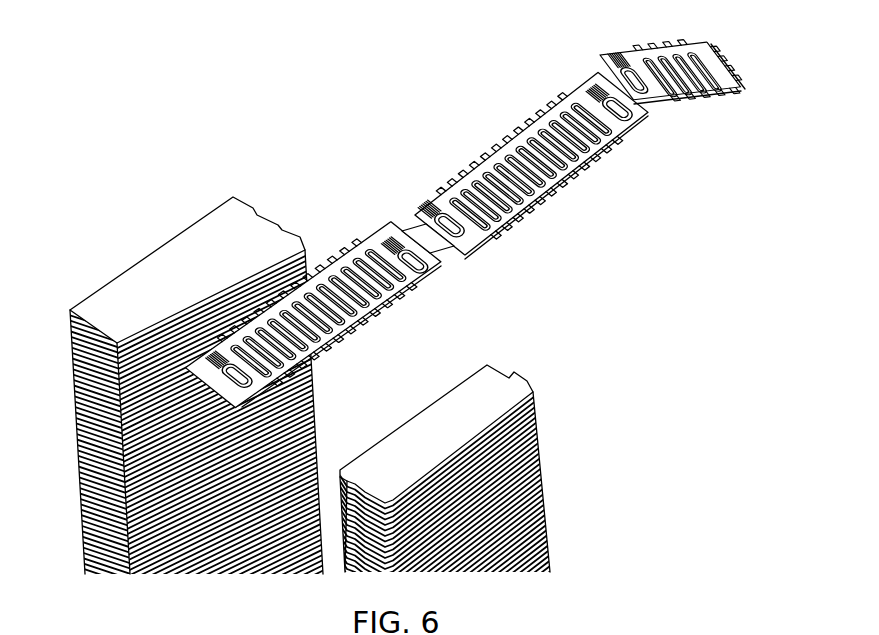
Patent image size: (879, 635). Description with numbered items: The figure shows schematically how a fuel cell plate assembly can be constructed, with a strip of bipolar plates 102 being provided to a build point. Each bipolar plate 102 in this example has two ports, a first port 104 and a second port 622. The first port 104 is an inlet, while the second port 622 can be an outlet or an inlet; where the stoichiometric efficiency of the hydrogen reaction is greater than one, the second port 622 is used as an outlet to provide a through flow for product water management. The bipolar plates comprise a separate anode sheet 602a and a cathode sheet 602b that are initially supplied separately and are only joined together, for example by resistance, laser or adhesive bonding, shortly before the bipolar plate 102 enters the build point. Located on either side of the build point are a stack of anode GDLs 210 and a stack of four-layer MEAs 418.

The stack of 4-layer MEAs 418 is at (128, 298).
The first port 104 is at (233, 373).
The second port 622 is at (400, 231).
The bipolar plate 102 is at (422, 297).
The stack of anode GDLs 210 is at (505, 392).
The anode sheet 602a is at (730, 60).
The cathode sheet 602b is at (717, 100).